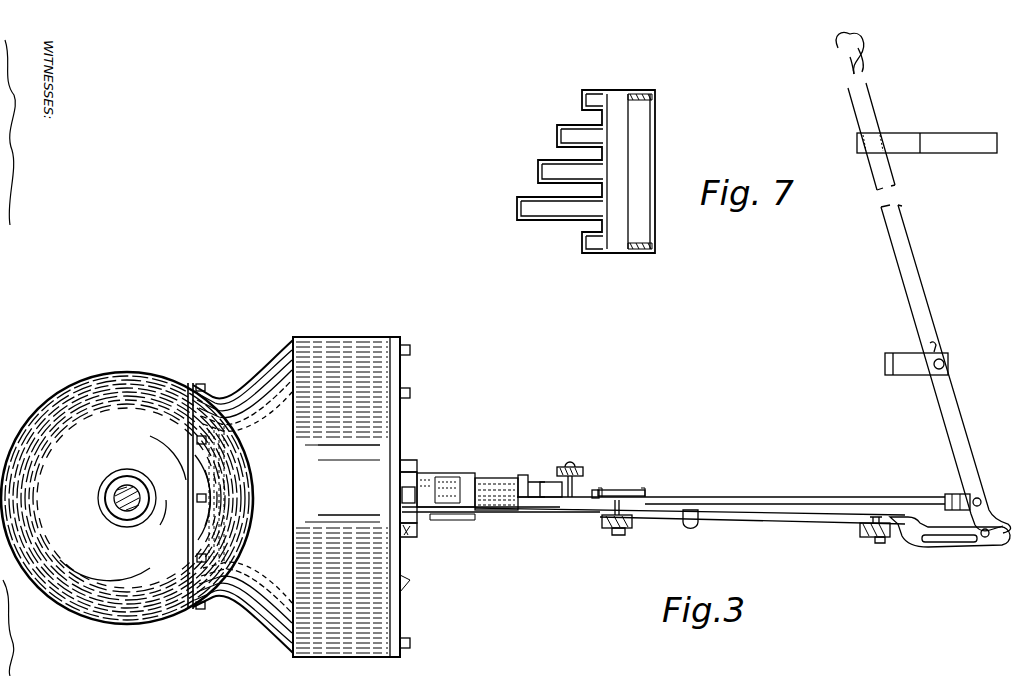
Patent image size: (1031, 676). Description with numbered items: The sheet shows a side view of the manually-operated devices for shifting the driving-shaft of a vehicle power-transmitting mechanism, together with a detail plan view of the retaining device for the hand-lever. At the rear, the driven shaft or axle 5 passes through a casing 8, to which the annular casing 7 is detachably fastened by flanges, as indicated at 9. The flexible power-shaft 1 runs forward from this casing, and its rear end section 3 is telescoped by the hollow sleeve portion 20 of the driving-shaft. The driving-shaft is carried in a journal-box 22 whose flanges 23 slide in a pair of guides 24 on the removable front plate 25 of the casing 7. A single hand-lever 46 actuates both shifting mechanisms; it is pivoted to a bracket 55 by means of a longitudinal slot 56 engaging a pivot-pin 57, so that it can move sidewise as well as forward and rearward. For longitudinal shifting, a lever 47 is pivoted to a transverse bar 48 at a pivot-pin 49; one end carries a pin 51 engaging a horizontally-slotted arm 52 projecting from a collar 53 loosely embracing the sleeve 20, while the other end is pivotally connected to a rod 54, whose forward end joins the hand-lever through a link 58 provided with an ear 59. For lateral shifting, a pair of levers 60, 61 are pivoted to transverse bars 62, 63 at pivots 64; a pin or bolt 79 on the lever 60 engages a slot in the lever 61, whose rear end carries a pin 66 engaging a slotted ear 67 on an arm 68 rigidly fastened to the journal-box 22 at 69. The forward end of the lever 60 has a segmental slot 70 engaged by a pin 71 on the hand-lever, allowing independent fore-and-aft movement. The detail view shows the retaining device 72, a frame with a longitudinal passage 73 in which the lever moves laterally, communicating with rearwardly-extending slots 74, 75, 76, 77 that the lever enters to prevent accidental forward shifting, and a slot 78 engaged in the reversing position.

In FIG. 3, the power-shaft 1 is at (629, 490).
In FIG. 3, the rear end section of the power-shaft 3 is at (597, 484).
In FIG. 3, the driven shaft or axle 5 is at (92, 507).
In FIG. 3, the annular casing 7 is at (351, 497).
In FIG. 3, the casing 8 is at (127, 498).
In FIG. 3, the fastening of casing flanges 9 is at (200, 612).
In FIG. 3, the sleeve portion of the driving-shaft 20 is at (505, 492).
In FIG. 3, the journal-box 22 is at (462, 492).
In FIG. 3, the flanges of the journal-box 23 is at (418, 466).
In FIG. 3, the guides 24 is at (412, 461).
In FIG. 3, the removable front plate 25 is at (406, 587).
In FIG. 3, the hand-lever 46 is at (923, 283).
In FIG. 3, the lever 47 is at (547, 482).
In FIG. 3, the transverse bar 48 is at (580, 470).
In FIG. 3, the pivot-pin 49 is at (572, 462).
In FIG. 3, the pin 51 is at (531, 482).
In FIG. 3, the horizontally-slotted arm 52 is at (506, 514).
In FIG. 3, the collar or ring 53 is at (521, 476).
In FIG. 3, the rod 54 is at (716, 497).
In FIG. 3, the bracket 55 is at (903, 376).
In FIG. 3, the longitudinal slot 56 is at (940, 346).
In FIG. 3, the pivot-pin 57 is at (945, 364).
In FIG. 3, the link 58 is at (973, 500).
In FIG. 3, the ear 59 is at (947, 495).
In FIG. 3, the lever 60 is at (800, 520).
In FIG. 3, the lever 61 is at (561, 516).
In FIG. 3, the transverse bar 62 is at (864, 538).
In FIG. 3, the transverse bar 63 is at (606, 530).
In FIG. 3, the pivots 64 is at (627, 533).
In FIG. 3, the pin 66 is at (470, 480).
In FIG. 3, the slotted ear 67 is at (448, 520).
In FIG. 3, the arm 68 is at (349, 502).
In FIG. 3, the fastening of the arm 69 is at (350, 464).
In FIG. 3, the segmental slot 70 is at (938, 547).
In FIG. 3, the pin 71 is at (985, 540).
In FIG. 3, the retaining device 72 is at (927, 128).
In FIG. 7, the retaining device 72 is at (657, 171).
In FIG. 7, the passage 73 is at (622, 173).
In FIG. 7, the slot 74 is at (528, 208).
In FIG. 7, the slot 75 is at (548, 172).
In FIG. 7, the slot 76 is at (565, 136).
In FIG. 7, the slot 77 is at (582, 100).
In FIG. 7, the slot 78 is at (586, 243).
In FIG. 3, the pin or bolt 79 is at (688, 510).